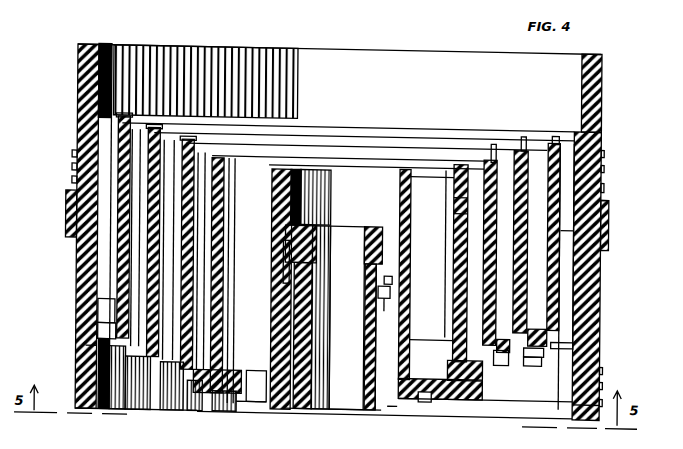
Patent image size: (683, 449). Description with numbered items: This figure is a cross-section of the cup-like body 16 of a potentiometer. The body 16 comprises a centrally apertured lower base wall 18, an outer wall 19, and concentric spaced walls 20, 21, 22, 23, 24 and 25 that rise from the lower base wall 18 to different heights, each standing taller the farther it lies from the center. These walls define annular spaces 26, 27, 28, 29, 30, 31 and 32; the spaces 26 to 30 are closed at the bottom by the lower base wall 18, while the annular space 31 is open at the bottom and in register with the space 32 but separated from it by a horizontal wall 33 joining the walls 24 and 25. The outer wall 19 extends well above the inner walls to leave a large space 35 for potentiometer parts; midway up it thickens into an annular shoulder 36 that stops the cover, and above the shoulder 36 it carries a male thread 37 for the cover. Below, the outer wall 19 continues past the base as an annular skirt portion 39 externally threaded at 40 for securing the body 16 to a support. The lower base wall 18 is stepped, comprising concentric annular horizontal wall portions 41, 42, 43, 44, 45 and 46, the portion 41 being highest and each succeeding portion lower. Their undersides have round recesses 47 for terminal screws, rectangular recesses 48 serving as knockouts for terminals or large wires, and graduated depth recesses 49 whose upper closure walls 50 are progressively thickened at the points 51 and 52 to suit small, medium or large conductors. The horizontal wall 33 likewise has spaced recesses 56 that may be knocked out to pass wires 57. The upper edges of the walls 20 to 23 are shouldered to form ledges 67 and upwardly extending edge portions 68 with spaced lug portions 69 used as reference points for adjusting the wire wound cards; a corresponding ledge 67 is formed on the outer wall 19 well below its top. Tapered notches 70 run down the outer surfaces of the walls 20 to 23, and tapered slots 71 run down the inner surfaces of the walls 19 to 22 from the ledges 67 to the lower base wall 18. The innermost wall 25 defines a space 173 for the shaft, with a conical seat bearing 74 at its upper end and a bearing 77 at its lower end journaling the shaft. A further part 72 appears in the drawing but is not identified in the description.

The body 16 is at (602, 124).
The lower base wall 18 is at (240, 406).
The outer wall 19 is at (600, 320).
The wall 20 is at (602, 140).
The wall 21 is at (505, 178).
The wall 22 is at (462, 190).
The wall 23 is at (455, 206).
The wall 24 is at (445, 333).
The wall 25 is at (368, 355).
The annular space 26 is at (610, 203).
The annular space 27 is at (575, 221).
The annular space 28 is at (460, 172).
The annular space 29 is at (460, 303).
The annular space 30 is at (455, 380).
The annular space 31 is at (298, 395).
The annular space 32 is at (410, 240).
The horizontal wall 33 is at (395, 272).
The space 35 is at (462, 55).
The annular shoulder 36 is at (610, 192).
The male thread 37 is at (604, 157).
The annular skirt portion 39 is at (578, 391).
The external thread 40 is at (604, 370).
The annular horizontal wall portion 41 is at (95, 370).
The annular horizontal wall portion 42 is at (135, 385).
The annular horizontal wall portion 43 is at (165, 385).
The annular horizontal wall portion 44 is at (200, 392).
The annular horizontal wall portion 45 is at (225, 400).
The annular horizontal wall portion 46 is at (255, 398).
The round recesses 47 is at (186, 390).
The rectangular recesses 48 is at (258, 367).
The graduated depth recesses 49 is at (100, 333).
The upper closure walls 50 is at (100, 325).
The thickened point 51 is at (90, 348).
The thickened point 52 is at (100, 302).
The spaced recesses 56 is at (392, 284).
The wires 57 is at (370, 300).
The ledges 67 is at (545, 133).
The upwardly extending edge portions 68 is at (549, 135).
The lug portions 69 is at (556, 128).
The notches 70 is at (225, 188).
The slots 71 is at (118, 152).
The end block 72 is at (94, 50).
The conical seat bearing 74 is at (362, 222).
The bearing 77 is at (322, 400).
The space 173 is at (346, 400).